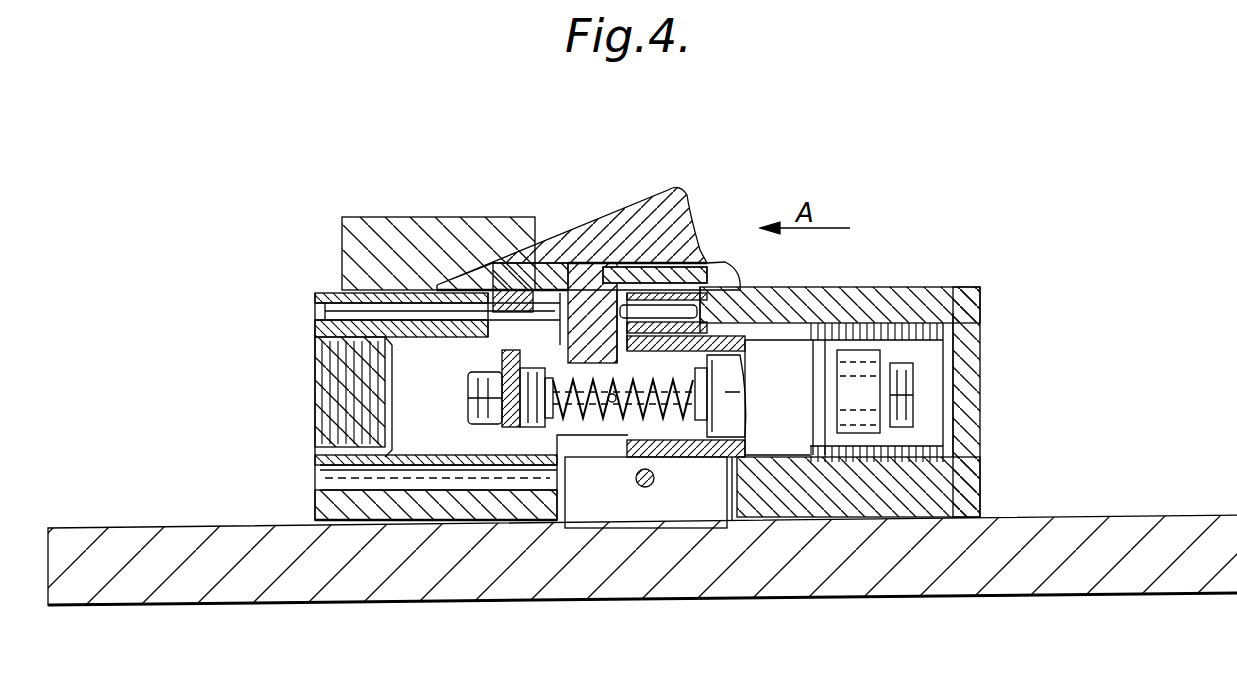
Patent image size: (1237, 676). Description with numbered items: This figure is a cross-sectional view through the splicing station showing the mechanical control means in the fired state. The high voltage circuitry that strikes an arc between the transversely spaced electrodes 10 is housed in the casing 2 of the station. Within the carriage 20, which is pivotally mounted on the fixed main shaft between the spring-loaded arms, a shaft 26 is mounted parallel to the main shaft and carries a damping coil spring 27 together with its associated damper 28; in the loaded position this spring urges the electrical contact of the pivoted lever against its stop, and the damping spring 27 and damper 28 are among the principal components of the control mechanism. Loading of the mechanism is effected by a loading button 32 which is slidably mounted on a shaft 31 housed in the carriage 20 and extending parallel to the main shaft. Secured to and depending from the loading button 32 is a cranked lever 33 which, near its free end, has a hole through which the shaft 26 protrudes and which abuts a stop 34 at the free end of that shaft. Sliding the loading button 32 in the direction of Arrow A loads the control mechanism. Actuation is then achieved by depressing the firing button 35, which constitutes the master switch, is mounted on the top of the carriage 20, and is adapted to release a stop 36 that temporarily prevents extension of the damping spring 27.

The casing 2 is at (958, 565).
The electrodes 10 is at (650, 486).
The carriage 20 is at (912, 287).
The shaft 26 is at (528, 412).
The damping coil spring 27 is at (590, 422).
The damper 28 is at (746, 432).
The shaft 31 is at (330, 310).
The loading button 32 is at (646, 222).
The cranked lever 33 is at (508, 426).
The stop 34 is at (468, 394).
The firing button 35 is at (405, 235).
The stop 36 is at (518, 298).